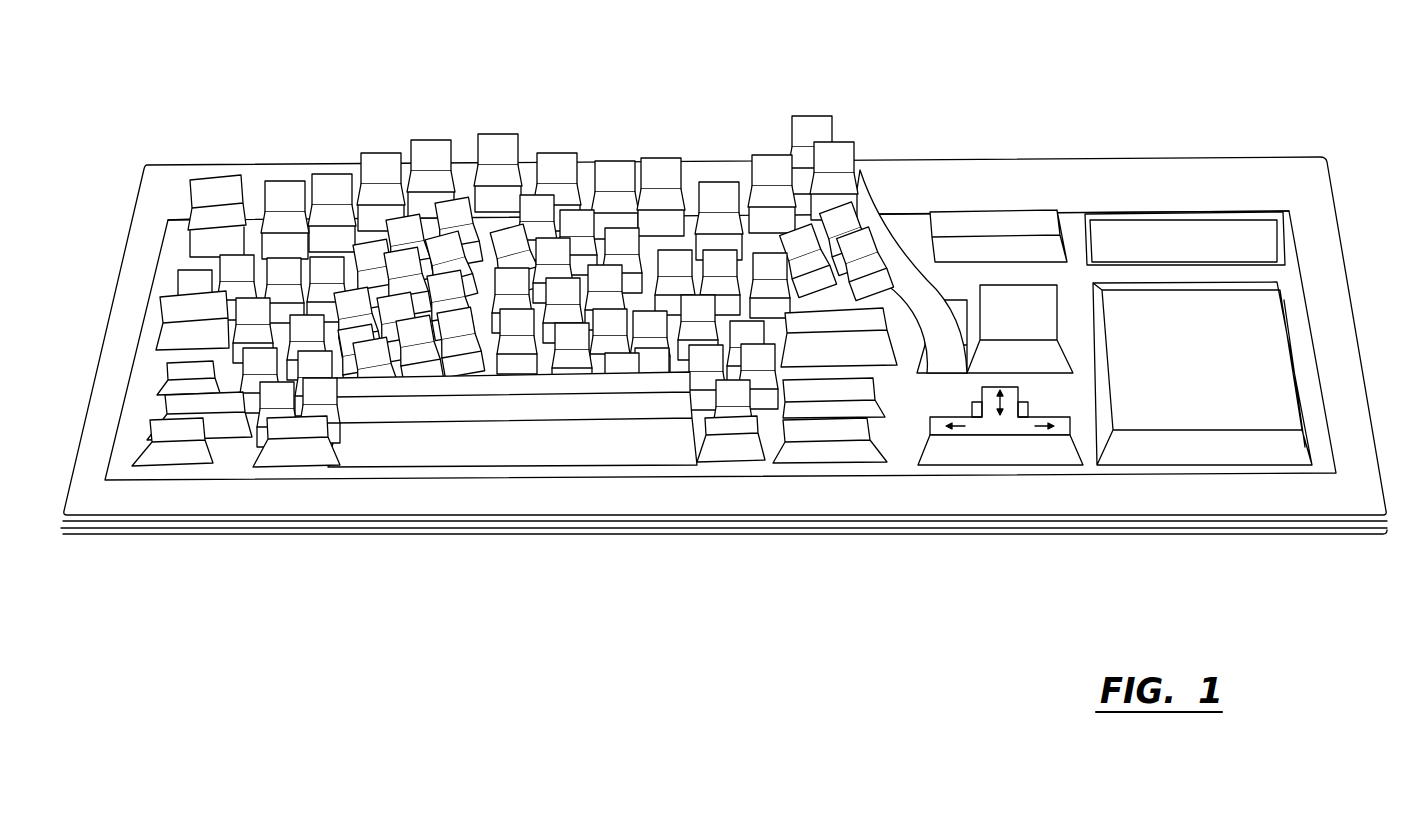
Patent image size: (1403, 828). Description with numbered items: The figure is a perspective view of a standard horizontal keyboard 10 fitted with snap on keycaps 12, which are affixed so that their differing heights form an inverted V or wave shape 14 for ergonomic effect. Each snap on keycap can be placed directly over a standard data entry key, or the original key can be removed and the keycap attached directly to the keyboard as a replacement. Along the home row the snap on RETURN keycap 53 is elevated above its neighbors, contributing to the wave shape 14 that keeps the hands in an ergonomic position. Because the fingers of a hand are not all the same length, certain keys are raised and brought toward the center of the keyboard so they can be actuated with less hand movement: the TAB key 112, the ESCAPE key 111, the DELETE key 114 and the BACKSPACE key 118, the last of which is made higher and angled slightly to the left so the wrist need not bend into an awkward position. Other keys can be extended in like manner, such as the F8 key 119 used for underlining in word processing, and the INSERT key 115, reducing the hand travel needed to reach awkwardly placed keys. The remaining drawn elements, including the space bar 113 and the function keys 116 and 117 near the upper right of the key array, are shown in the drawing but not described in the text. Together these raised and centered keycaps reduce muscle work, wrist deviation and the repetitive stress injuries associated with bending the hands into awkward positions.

The standard horizontal keyboard 10 is at (724, 315).
The snap on keycaps 12 is at (1093, 150).
The inverted V or wave shape 14 is at (415, 110).
The snap on RETURN keycap 53 is at (863, 350).
The ESCAPE key 111 is at (240, 184).
The TAB key 112 is at (160, 310).
The space bar 113 is at (425, 413).
The DELETE key 114 is at (898, 236).
The INSERT key 115 is at (860, 210).
The F12 key 116 is at (855, 148).
The F11 key 117 is at (817, 118).
The BACKSPACE key 118 is at (748, 203).
The F8 key 119 is at (665, 155).